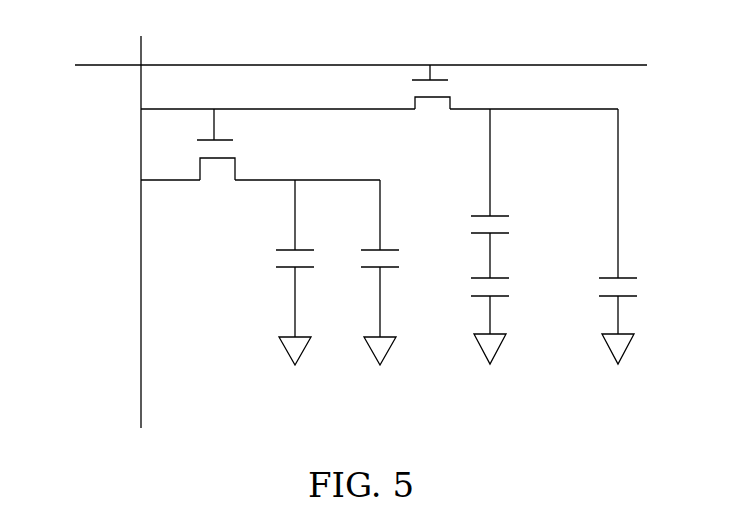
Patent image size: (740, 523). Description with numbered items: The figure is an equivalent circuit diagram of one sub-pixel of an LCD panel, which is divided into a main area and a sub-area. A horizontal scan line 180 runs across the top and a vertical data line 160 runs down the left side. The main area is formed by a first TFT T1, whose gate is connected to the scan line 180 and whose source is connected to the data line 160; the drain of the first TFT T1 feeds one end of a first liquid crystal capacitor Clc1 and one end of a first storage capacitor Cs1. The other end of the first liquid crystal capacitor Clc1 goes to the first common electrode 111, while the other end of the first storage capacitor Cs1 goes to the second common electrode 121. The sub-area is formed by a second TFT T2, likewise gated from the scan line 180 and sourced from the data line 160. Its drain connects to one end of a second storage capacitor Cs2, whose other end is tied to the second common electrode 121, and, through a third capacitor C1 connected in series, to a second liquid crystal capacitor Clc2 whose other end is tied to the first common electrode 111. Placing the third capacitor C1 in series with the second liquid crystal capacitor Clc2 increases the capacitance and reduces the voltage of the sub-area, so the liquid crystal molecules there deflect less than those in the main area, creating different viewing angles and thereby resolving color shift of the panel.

The data line 160 is at (134, 42).
The gate line 180 is at (96, 64).
The first TFT T1 is at (225, 144).
The second TFT T2 is at (440, 87).
The first liquid crystal capacitor Clc1 is at (276, 258).
The first storage capacitor Cs1 is at (390, 258).
The coupling capacitor C1 is at (497, 193).
The second liquid crystal capacitor Clc2 is at (501, 306).
The second storage capacitor Cs2 is at (628, 221).
The first common electrode 111 is at (392, 358).
The second common electrode 121 is at (499, 358).